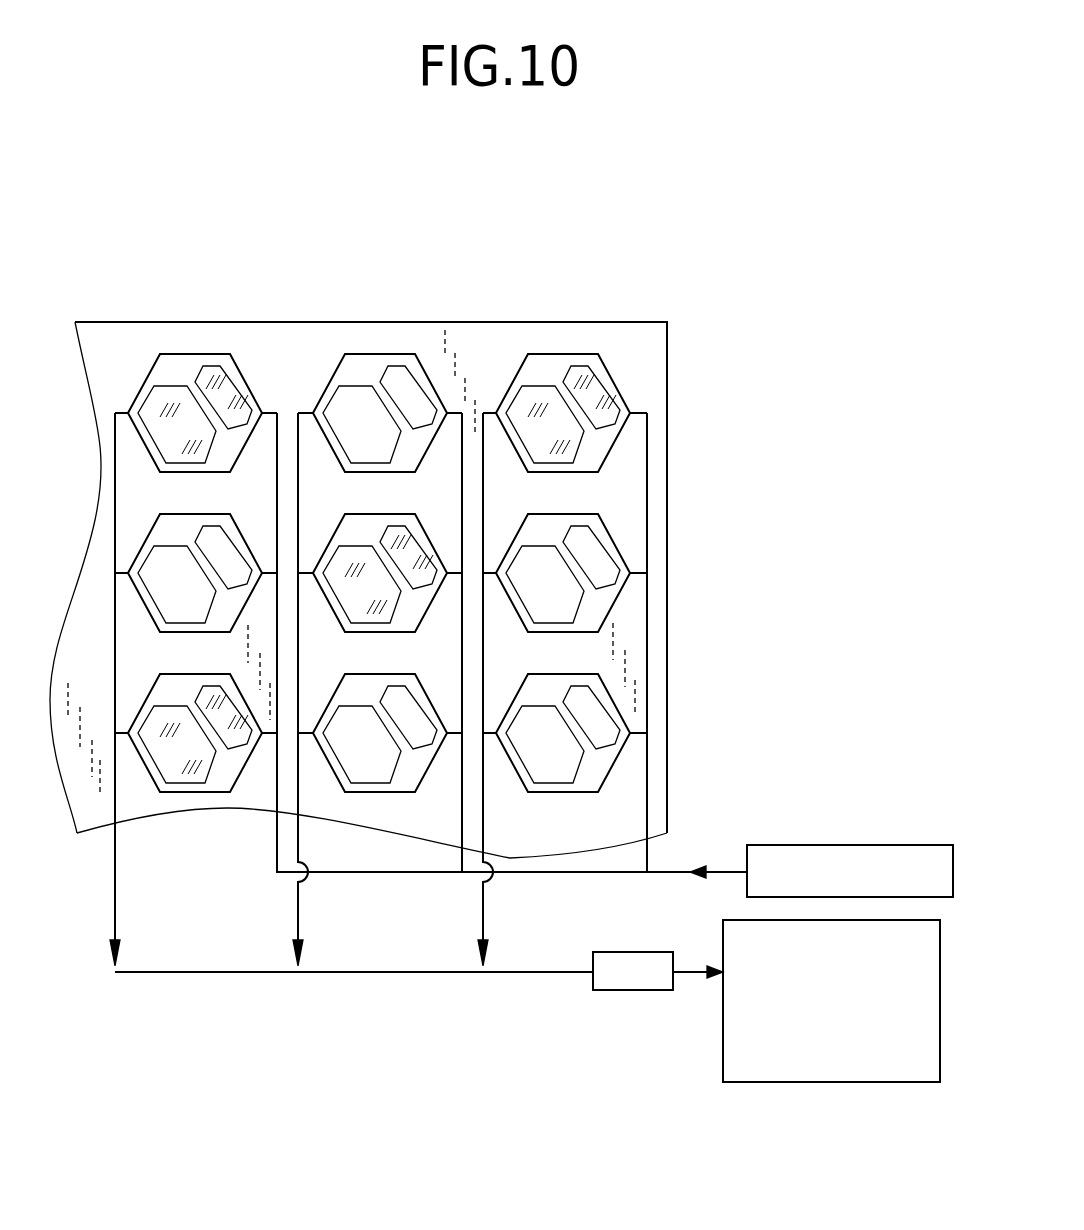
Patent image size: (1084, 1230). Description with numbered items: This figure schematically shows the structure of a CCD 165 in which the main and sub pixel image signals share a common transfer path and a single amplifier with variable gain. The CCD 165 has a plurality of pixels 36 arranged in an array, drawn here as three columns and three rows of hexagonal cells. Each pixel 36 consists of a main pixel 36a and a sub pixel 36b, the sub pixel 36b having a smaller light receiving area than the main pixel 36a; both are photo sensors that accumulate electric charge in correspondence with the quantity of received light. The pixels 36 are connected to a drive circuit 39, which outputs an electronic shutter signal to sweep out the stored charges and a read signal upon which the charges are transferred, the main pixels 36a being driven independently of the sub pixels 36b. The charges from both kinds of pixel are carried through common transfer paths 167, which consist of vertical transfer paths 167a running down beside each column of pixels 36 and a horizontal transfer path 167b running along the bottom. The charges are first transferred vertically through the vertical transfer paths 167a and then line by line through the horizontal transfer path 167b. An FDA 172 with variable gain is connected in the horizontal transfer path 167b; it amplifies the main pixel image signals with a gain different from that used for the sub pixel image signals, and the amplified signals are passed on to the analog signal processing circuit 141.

The CCD 165 is at (392, 287).
The pixel 36 is at (148, 373).
The main pixel 36a is at (176, 386).
The sub pixel 36b is at (213, 366).
The transfer paths 167 is at (428, 795).
The vertical transfer paths 167a is at (116, 893).
The horizontal transfer path 167b is at (455, 974).
The drive circuit 39 is at (803, 844).
The FDA 172 is at (635, 992).
The analog signal processing circuit 141 is at (752, 1084).